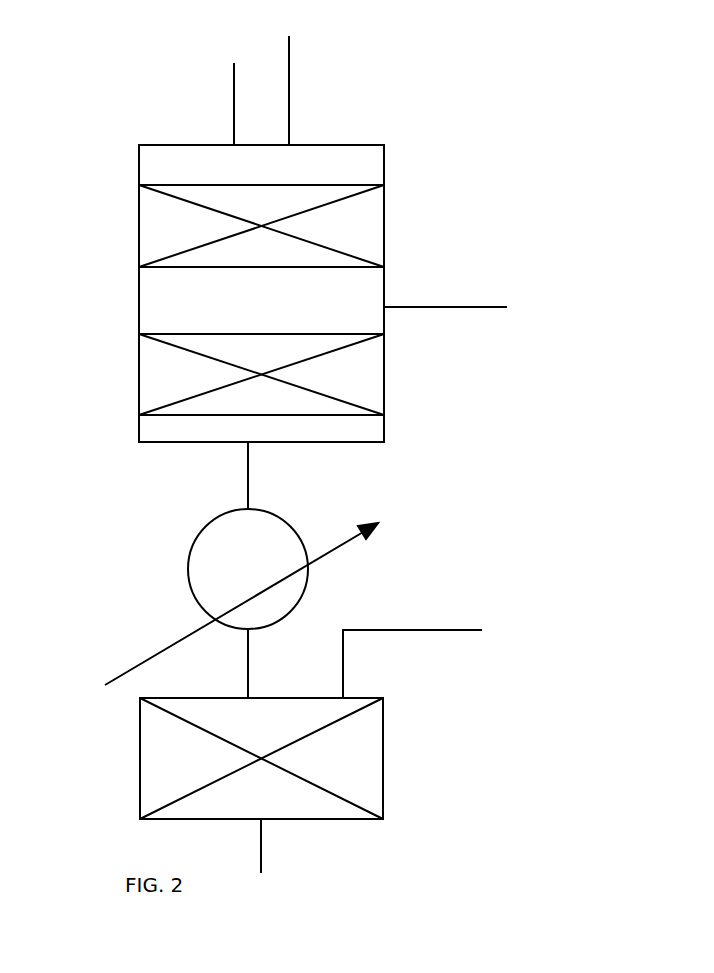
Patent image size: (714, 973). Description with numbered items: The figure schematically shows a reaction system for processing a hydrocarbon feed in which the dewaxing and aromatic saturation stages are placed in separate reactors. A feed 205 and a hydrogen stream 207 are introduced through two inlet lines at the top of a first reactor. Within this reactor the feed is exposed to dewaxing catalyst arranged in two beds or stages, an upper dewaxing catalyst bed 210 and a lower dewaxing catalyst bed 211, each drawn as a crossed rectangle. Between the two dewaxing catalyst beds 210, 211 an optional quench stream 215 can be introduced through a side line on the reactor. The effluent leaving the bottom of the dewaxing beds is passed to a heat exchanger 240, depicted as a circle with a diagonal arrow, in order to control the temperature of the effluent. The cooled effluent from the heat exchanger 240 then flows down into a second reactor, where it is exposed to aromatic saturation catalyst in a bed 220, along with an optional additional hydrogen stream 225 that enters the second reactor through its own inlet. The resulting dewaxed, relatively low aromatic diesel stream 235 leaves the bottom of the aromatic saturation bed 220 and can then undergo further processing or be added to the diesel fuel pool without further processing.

The feed 205 is at (216, 118).
The hydrogen stream 207 is at (312, 118).
The dewaxing catalyst bed 210 is at (135, 228).
The dewaxing catalyst bed 211 is at (135, 389).
The quench stream 215 is at (452, 295).
The aromatic saturation catalyst bed 220 is at (125, 753).
The additional hydrogen stream 225 is at (437, 607).
The dewaxed, relatively low aromatic diesel stream 235 is at (310, 839).
The heat exchanger 240 is at (339, 578).